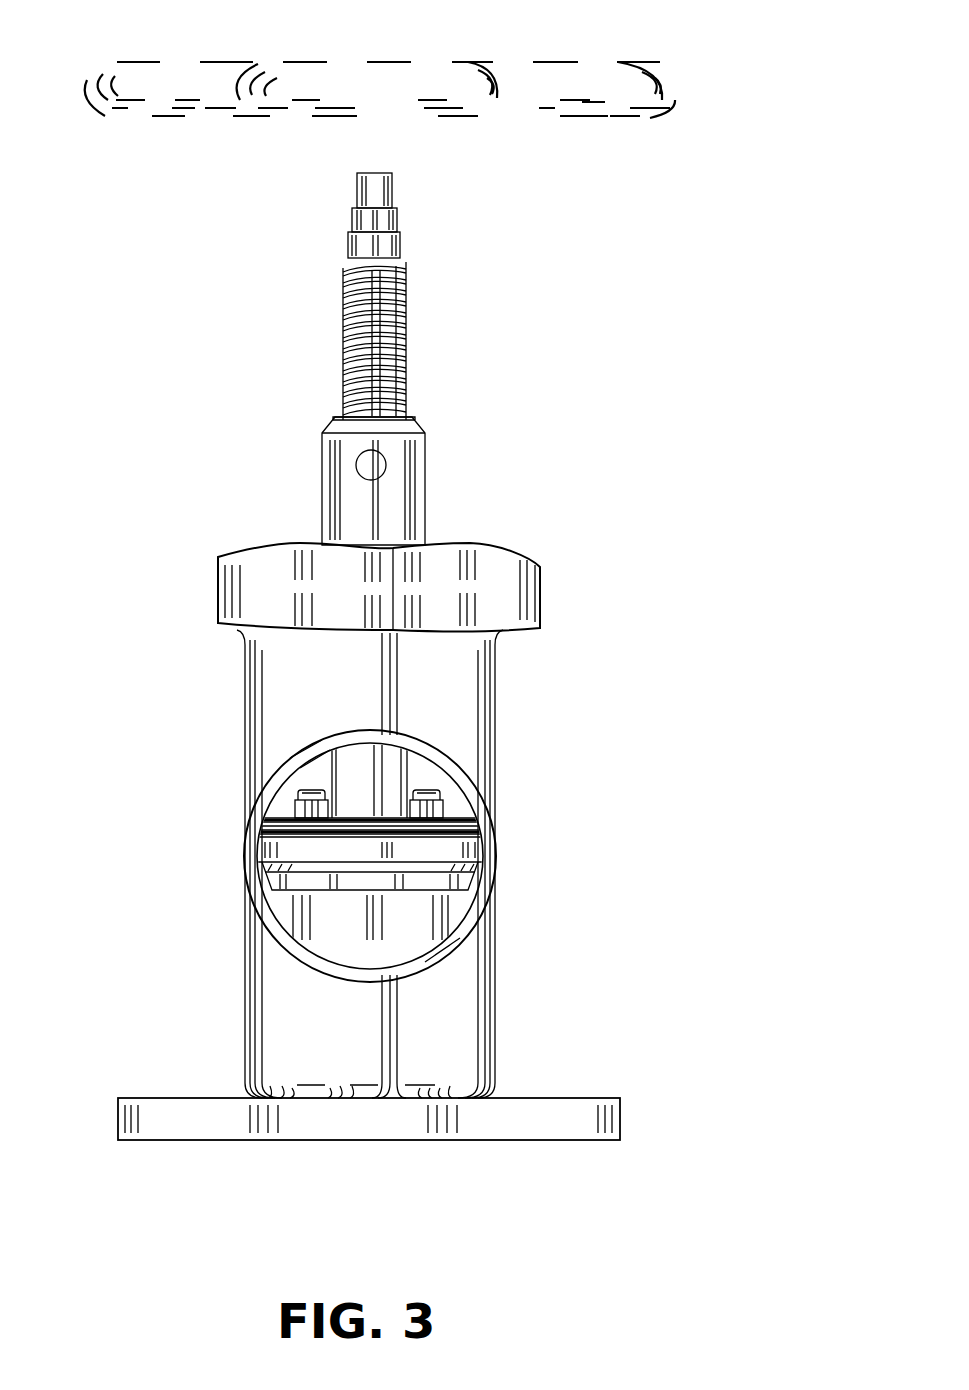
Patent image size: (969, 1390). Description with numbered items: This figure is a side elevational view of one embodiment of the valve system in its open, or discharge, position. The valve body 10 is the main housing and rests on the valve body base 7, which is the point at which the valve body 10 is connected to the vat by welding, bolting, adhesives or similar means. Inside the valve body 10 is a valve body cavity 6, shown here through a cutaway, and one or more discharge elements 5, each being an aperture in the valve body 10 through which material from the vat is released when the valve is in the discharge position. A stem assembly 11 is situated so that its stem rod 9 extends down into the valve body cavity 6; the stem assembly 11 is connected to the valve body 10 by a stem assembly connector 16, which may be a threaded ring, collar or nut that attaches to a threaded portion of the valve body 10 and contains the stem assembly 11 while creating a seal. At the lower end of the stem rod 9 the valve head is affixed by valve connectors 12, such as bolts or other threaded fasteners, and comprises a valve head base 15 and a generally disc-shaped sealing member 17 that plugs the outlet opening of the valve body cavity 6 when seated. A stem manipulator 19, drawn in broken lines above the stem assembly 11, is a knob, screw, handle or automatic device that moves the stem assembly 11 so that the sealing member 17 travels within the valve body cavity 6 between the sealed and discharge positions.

The stem manipulator 19 is at (228, 60).
The stem assembly 11 is at (455, 168).
The stem assembly connector 16 is at (532, 593).
The valve body 10 is at (97, 1133).
The stem rod 9 is at (390, 770).
The valve connectors 12 is at (445, 803).
The valve head base 15 is at (460, 828).
The sealing member 17 is at (417, 847).
The valve body cavity 6 is at (457, 900).
The discharge element 5 is at (455, 940).
The valve body base 7 is at (610, 1120).